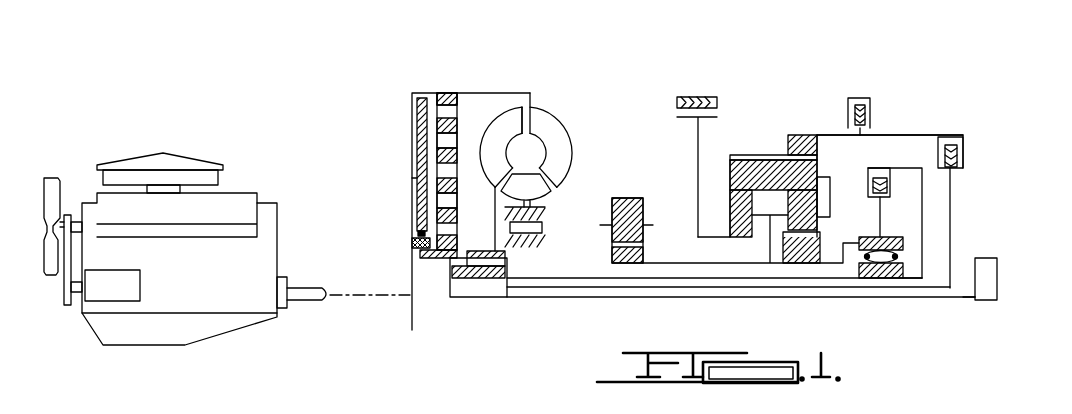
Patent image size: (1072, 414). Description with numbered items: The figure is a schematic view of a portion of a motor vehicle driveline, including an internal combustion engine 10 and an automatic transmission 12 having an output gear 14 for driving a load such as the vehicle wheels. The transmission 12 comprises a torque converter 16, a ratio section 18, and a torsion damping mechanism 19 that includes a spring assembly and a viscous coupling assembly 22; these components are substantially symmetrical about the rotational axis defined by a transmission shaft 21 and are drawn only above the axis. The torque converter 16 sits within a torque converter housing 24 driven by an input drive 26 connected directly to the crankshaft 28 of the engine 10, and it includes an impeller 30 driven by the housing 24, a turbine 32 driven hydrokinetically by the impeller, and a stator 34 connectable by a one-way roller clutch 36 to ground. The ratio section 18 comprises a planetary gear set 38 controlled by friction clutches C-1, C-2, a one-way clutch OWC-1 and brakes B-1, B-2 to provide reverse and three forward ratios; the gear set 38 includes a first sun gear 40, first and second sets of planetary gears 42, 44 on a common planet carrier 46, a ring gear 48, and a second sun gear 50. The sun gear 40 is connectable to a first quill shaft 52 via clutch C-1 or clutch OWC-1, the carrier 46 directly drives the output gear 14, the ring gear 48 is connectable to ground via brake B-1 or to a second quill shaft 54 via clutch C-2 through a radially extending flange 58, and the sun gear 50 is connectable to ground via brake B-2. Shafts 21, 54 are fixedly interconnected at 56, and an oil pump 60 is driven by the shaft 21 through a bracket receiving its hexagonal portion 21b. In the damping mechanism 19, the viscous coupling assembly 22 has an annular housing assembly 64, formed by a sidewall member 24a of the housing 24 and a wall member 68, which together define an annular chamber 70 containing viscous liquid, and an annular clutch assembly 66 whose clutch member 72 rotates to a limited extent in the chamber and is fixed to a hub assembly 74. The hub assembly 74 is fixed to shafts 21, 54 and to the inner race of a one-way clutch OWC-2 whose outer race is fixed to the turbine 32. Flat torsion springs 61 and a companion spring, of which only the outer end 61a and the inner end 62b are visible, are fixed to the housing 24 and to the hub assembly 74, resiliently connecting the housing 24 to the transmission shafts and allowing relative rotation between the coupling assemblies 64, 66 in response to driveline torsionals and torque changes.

The internal combustion engine 10 is at (248, 171).
The automatic transmission 12 is at (688, 73).
The output drive or gear 14 is at (626, 197).
The torque converter 16 is at (507, 47).
The ratio section 18 is at (786, 84).
The torsion damping mechanism 19 is at (468, 106).
The transmission shaft 21 is at (710, 298).
The hexagonal portion of shaft 21b is at (965, 299).
The viscous coupling assembly 22 is at (409, 157).
The torque converter housing 24 is at (512, 86).
The sidewall member 24a is at (378, 163).
The input drive 26 is at (352, 299).
The crankshaft 28 is at (310, 300).
The impeller 30 is at (574, 144).
The turbine 32 is at (529, 108).
The stator 34 is at (548, 203).
The one-way roller clutch 36 is at (547, 228).
The planetary gear set 38 is at (763, 146).
The first sun gear 40 is at (783, 247).
The first set of planetary gears 42 is at (820, 168).
The second set of planetary gears 44 is at (822, 225).
The planet carrier 46 is at (822, 187).
The ring gear 48 is at (797, 135).
The second sun gear 50 is at (730, 204).
The first quill shaft 52 is at (817, 279).
The second quill shaft 54 is at (628, 289).
The interconnection 56 is at (442, 288).
The radially extending flange 58 is at (952, 212).
The oil pump 60 is at (997, 272).
The flat torsion spring 61 is at (458, 148).
The radially outer end of spring 61a is at (447, 95).
The radially inner end of spring 62b is at (427, 233).
The annular housing assembly 64 is at (412, 127).
The annular clutch assembly 66 is at (418, 178).
The wall member 68 is at (446, 140).
The annular chamber 70 is at (413, 92).
The annular clutch member 72 is at (418, 198).
The hub assembly 74 is at (430, 262).
The brake B-1 is at (868, 113).
The brake B-2 is at (677, 104).
The friction clutch C-1 is at (888, 187).
The friction clutch C-2 is at (958, 152).
The one-way clutch OWC-1 is at (905, 261).
The one-way clutch OWC-2 is at (508, 274).